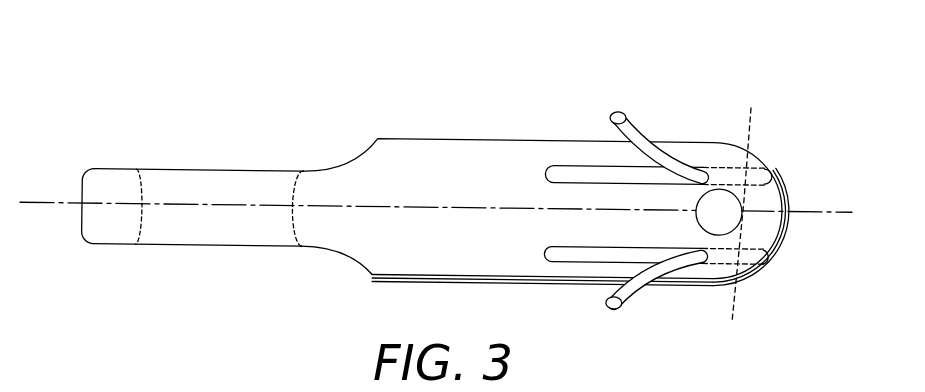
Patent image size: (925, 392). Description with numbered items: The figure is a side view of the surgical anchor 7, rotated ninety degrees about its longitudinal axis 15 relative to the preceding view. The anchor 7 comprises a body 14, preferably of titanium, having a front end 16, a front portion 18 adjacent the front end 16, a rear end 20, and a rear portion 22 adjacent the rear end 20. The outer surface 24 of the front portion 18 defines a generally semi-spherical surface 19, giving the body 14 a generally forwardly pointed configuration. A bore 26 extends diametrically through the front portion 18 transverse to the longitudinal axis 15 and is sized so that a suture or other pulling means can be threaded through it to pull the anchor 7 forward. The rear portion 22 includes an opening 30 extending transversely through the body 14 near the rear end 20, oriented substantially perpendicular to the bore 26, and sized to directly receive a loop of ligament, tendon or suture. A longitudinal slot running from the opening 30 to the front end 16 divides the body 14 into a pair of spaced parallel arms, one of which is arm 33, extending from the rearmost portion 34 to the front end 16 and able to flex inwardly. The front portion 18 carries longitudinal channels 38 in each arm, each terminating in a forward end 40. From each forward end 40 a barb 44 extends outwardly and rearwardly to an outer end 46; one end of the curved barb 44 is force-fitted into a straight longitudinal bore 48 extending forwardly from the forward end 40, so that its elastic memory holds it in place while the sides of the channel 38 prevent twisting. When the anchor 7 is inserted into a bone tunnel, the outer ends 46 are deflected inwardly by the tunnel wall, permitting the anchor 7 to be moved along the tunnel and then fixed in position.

The surgical anchor 7 is at (444, 82).
The body 14 is at (482, 124).
The longitudinal axis 15 is at (805, 212).
The front end 16 is at (790, 228).
The front portion 18 is at (657, 296).
The semi-spherical surface 19 is at (761, 156).
The rear end 20 is at (82, 215).
The rear portion 22 is at (175, 256).
The outer surface 24 is at (675, 275).
The bore 26 is at (731, 234).
The opening 30 is at (207, 183).
The arm 33 is at (417, 274).
The rearmost portion 34 is at (118, 226).
The longitudinal channel 38 is at (560, 170).
The forward end 40 is at (692, 173).
The barb 44 is at (630, 131).
The outer end 46 is at (615, 111).
The longitudinal bore 48 is at (754, 218).